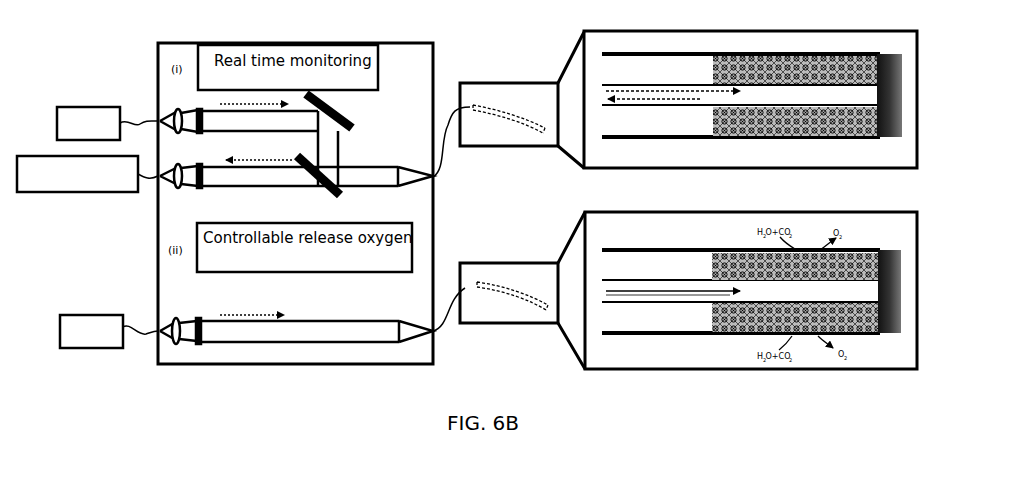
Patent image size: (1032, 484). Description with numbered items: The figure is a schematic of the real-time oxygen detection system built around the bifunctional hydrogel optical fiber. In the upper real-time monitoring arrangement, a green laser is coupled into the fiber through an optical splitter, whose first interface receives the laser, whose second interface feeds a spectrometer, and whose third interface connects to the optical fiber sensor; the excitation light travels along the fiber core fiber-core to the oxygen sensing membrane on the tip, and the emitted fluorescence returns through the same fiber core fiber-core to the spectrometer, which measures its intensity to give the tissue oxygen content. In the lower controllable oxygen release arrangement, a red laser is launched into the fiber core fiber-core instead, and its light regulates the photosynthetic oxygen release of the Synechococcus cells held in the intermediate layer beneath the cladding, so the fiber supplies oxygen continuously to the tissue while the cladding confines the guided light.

The light source laser is at (107, 123).
The element spectrometer is at (87, 174).
The fiber core fiber-core is at (610, 102).
The element cladding is at (666, 139).